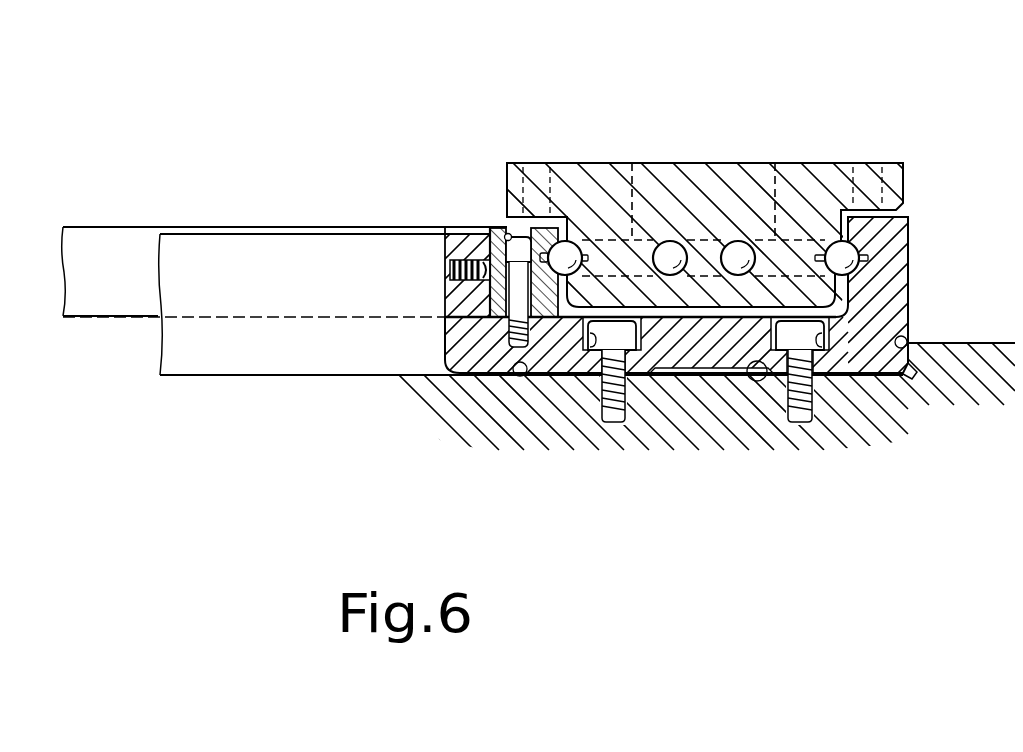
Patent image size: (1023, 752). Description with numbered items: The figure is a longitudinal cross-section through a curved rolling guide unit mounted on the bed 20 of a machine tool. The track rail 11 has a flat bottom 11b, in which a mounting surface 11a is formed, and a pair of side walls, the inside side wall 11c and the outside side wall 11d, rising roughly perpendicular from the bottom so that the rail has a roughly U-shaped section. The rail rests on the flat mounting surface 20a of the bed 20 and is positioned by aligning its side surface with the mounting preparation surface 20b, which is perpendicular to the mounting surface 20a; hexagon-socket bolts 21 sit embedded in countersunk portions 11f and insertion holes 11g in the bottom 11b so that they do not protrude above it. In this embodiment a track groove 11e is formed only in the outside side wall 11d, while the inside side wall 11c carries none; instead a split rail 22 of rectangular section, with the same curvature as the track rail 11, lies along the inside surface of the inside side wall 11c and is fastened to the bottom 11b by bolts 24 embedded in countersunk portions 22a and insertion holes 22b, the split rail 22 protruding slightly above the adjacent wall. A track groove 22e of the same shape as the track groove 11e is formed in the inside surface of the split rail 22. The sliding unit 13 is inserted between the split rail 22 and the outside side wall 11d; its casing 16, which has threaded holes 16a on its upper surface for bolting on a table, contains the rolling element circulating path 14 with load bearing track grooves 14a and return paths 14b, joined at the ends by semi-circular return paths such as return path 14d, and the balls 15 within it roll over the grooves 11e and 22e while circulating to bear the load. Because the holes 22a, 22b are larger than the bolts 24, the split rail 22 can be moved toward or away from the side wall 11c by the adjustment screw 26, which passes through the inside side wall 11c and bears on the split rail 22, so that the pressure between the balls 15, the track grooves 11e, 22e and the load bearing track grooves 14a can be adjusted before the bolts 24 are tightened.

The track rail 11 is at (284, 225).
The mounting surface 11a is at (772, 372).
The bottom 11b is at (702, 372).
The inside side wall 11c is at (443, 307).
The outside side wall 11d is at (893, 283).
The track groove 11e is at (862, 258).
The countersunk portion 11f is at (543, 400).
The insertion hole 11g is at (603, 372).
The sliding unit 13 is at (912, 165).
The rolling element circulating path 14 is at (612, 238).
The load bearing track groove 14a is at (568, 242).
The return path 14b is at (672, 242).
The return path 14d is at (632, 162).
The ball 15 is at (508, 228).
The casing 16 is at (560, 162).
The threaded hole 16a is at (530, 162).
The bed 20 is at (975, 442).
The mounting surface 20a is at (503, 380).
The mounting preparation surface 20b is at (912, 338).
The bolt 21 is at (613, 424).
The split rail 22 is at (425, 232).
The countersunk portion 22a is at (497, 230).
The insertion hole 22b is at (428, 402).
The track groove 22e is at (447, 293).
The bolt 24 is at (478, 392).
The adjustment screw 26 is at (452, 266).